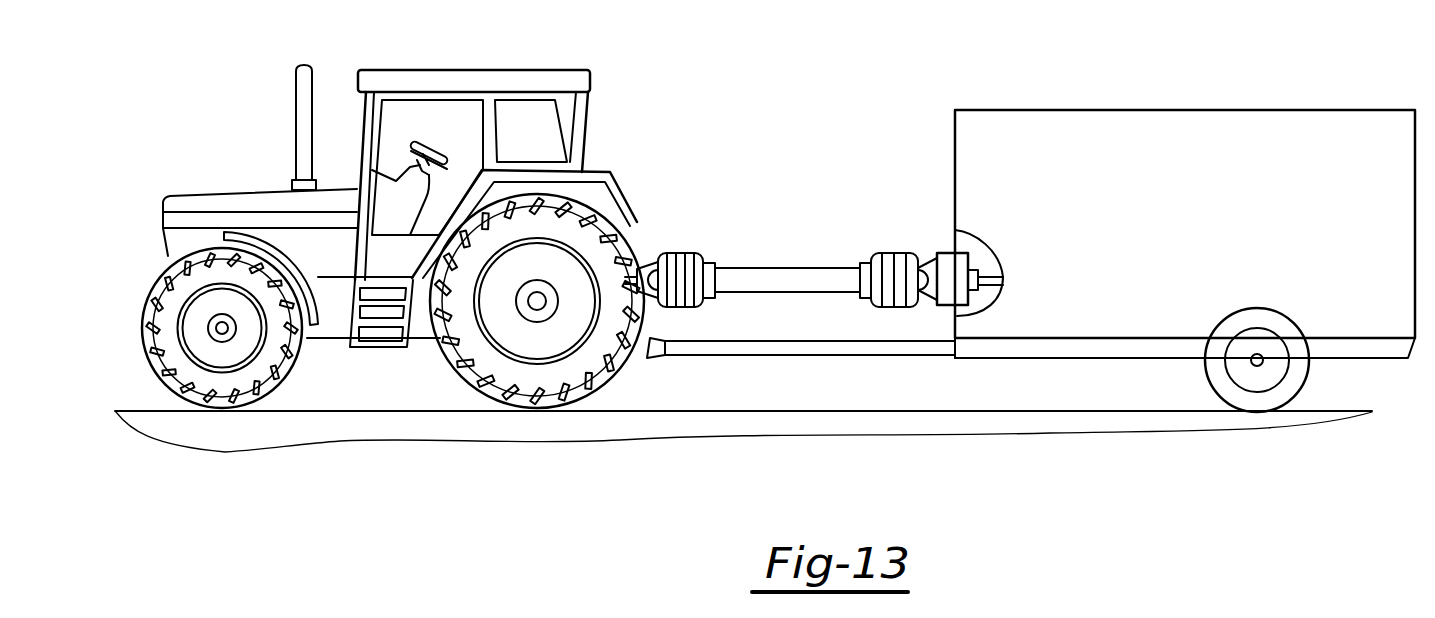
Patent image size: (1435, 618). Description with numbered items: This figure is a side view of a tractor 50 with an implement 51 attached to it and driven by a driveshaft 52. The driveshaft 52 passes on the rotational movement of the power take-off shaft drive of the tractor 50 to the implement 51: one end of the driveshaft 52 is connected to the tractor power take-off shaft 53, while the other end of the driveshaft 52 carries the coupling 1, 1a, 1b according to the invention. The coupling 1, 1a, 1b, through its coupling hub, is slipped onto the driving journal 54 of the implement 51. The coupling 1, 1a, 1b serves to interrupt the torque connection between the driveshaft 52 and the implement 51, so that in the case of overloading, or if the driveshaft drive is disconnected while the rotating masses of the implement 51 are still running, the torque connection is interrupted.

The tractor 50 is at (255, 230).
The implement 51 is at (1090, 130).
The driveshaft 52 is at (812, 275).
The tractor power take-off shaft 53 is at (600, 368).
The coupling 1 is at (952, 292).
The coupling 1a is at (952, 279).
The coupling 1b is at (952, 279).
The driving journal 54 is at (1003, 282).